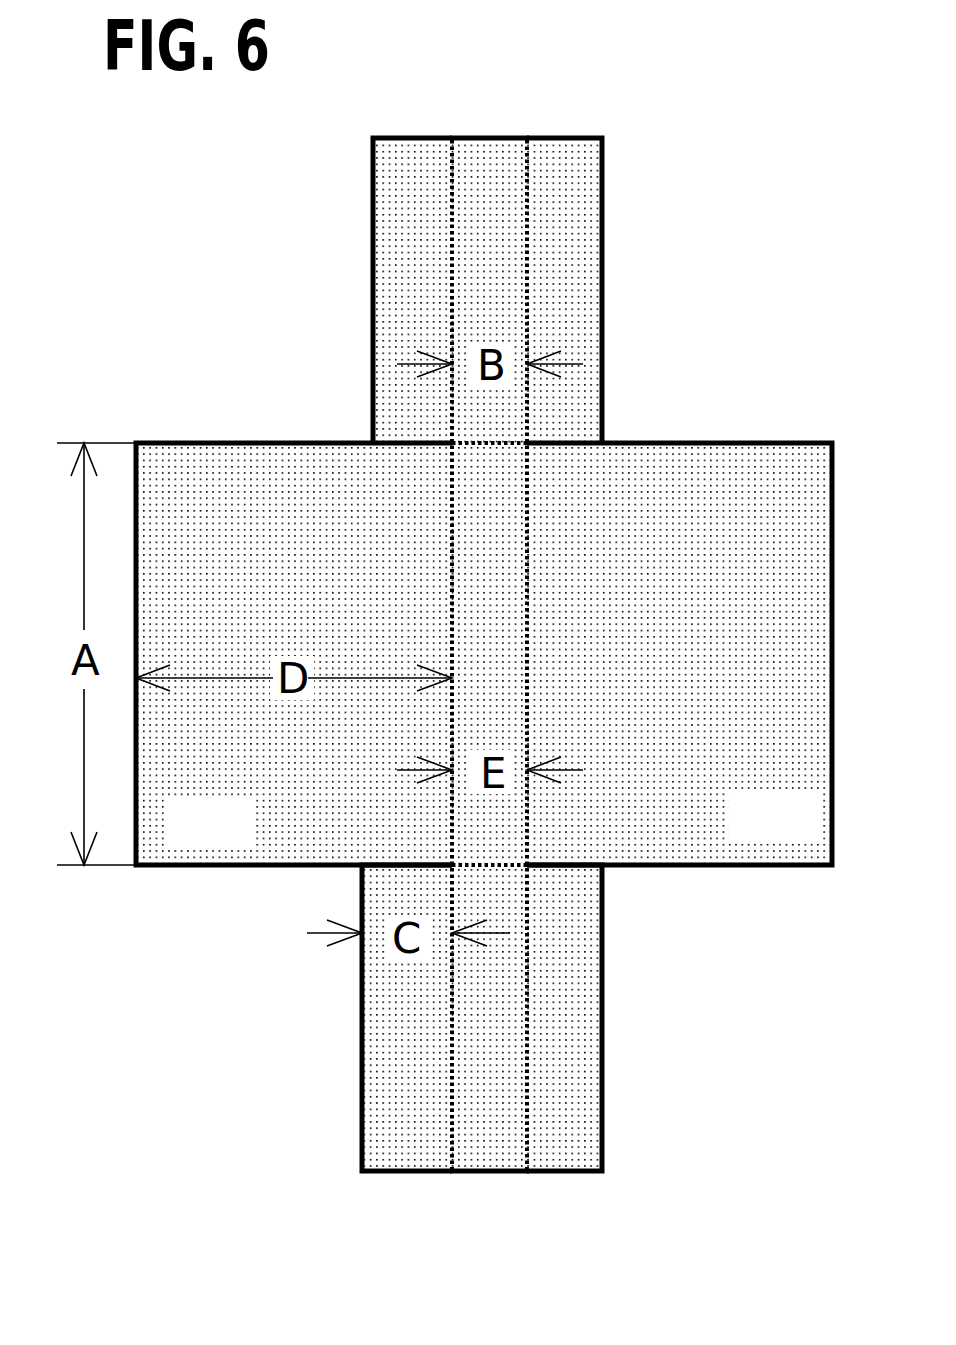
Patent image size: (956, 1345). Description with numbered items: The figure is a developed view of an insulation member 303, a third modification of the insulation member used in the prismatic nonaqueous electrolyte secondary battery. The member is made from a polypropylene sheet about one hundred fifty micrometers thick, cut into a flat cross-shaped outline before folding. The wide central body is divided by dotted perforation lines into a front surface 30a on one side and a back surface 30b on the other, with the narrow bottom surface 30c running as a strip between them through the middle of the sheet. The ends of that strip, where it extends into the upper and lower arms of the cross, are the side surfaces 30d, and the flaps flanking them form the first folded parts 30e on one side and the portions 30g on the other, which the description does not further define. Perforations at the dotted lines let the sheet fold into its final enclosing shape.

The insulation member 303 is at (109, 183).
The front surface 30a is at (812, 835).
The back surface 30b is at (250, 842).
The bottom surface 30c is at (480, 533).
The side surfaces 30d is at (493, 192).
The first folded parts 30e is at (410, 293).
The right protruding portion 30g is at (577, 247).